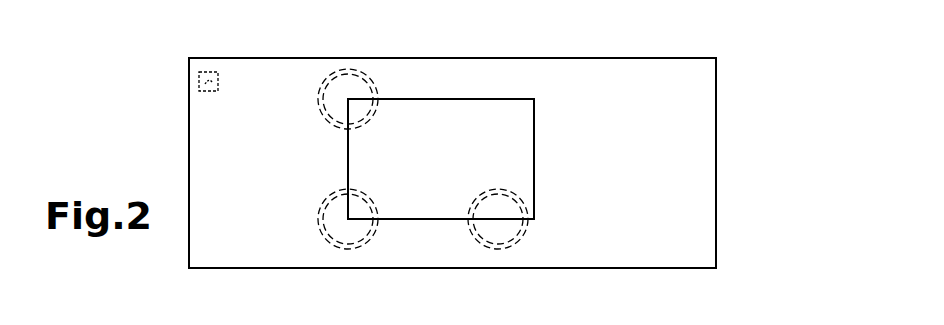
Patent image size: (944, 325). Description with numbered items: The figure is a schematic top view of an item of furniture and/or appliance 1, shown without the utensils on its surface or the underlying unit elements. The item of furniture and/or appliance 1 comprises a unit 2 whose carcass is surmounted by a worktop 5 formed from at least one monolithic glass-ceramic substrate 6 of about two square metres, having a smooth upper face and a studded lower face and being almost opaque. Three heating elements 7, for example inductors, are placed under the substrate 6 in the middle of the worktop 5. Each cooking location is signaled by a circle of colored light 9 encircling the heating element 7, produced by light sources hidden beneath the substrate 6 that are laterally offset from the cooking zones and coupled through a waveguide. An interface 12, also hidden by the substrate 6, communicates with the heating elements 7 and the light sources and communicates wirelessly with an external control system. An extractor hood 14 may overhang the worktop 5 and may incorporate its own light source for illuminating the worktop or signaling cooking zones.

The item of furniture and/or appliance 1 is at (769, 101).
The unit 2 is at (657, 56).
The worktop 5 is at (490, 70).
The monolithic glass-ceramic substrate 6 is at (716, 190).
The heating elements 7 is at (318, 95).
The circle of colored light 9 is at (352, 70).
The interface 12 is at (197, 74).
The extractor hood 14 is at (517, 126).